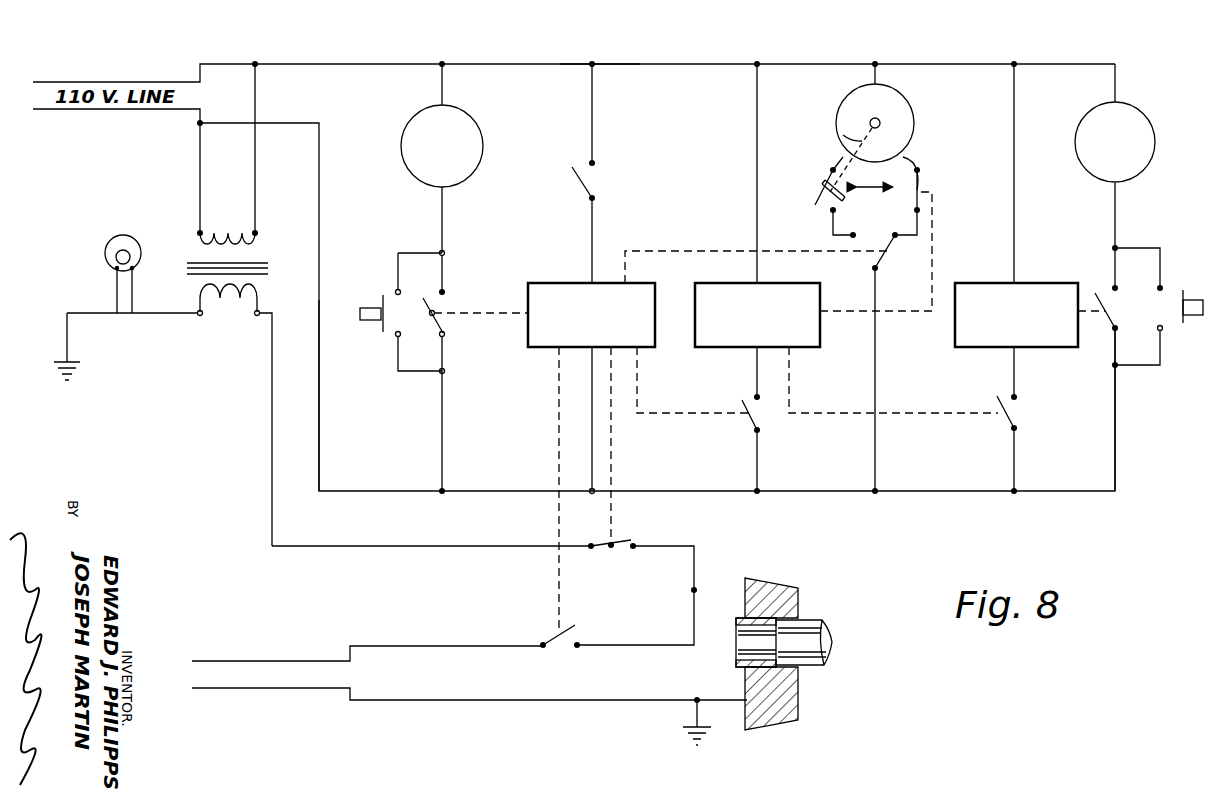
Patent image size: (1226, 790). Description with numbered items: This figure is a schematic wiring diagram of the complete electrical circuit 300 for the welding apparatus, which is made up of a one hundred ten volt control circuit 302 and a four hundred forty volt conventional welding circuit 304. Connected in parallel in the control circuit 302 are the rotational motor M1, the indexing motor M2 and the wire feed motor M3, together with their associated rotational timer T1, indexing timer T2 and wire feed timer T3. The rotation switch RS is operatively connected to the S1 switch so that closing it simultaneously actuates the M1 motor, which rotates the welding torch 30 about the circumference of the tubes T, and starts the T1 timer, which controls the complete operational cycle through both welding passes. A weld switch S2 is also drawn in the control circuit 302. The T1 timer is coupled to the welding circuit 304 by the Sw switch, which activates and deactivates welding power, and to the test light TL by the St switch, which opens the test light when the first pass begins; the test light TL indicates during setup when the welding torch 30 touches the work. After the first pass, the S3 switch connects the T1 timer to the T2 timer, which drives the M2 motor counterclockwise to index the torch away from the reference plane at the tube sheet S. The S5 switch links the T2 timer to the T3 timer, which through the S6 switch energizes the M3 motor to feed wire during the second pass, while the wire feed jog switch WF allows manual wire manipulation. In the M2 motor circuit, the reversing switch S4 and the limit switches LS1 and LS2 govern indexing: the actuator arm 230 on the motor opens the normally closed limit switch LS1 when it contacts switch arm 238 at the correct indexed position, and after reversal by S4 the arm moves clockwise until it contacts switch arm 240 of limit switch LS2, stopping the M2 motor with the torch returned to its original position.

The control circuit 302 is at (601, 57).
The electrical circuit 300 is at (216, 425).
The welding circuit 304 is at (497, 707).
The welding torch 30 is at (735, 611).
The actuator arm 230 is at (862, 138).
The switch arm 240 is at (828, 182).
The switch arm 238 is at (920, 177).
The rotational motor M1 is at (478, 136).
The indexing motor M2 is at (843, 112).
The wire feed motor M3 is at (1152, 135).
The test light TL is at (105, 250).
The rotation switch RS is at (366, 307).
The S1 switch S1 is at (438, 297).
The weld switch S2 is at (578, 183).
The S3 switch S3 is at (755, 420).
The reversing switch S4 is at (878, 250).
The S5 switch S5 is at (1011, 420).
The S6 switch S6 is at (1108, 320).
The St switch St is at (620, 543).
The Sw switch Sw is at (545, 642).
The wire feed jog switch WF is at (1196, 290).
The rotational timer T1 is at (532, 338).
The indexing timer T2 is at (712, 338).
The wire feed timer T3 is at (985, 338).
The limit switch LS1 is at (920, 181).
The limit switch LS2 is at (838, 200).
The tube sheet S is at (795, 586).
The tube T is at (812, 622).